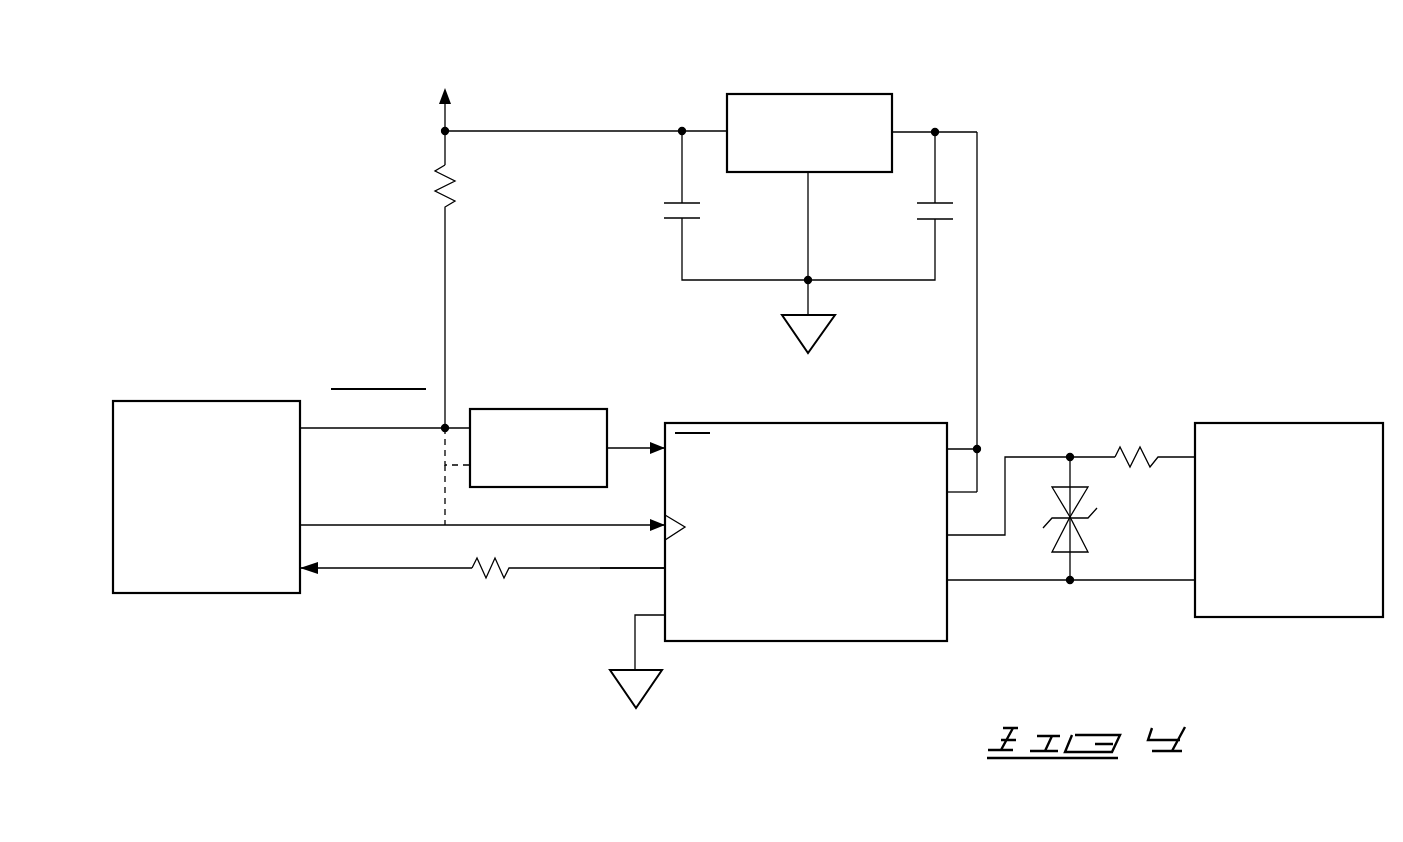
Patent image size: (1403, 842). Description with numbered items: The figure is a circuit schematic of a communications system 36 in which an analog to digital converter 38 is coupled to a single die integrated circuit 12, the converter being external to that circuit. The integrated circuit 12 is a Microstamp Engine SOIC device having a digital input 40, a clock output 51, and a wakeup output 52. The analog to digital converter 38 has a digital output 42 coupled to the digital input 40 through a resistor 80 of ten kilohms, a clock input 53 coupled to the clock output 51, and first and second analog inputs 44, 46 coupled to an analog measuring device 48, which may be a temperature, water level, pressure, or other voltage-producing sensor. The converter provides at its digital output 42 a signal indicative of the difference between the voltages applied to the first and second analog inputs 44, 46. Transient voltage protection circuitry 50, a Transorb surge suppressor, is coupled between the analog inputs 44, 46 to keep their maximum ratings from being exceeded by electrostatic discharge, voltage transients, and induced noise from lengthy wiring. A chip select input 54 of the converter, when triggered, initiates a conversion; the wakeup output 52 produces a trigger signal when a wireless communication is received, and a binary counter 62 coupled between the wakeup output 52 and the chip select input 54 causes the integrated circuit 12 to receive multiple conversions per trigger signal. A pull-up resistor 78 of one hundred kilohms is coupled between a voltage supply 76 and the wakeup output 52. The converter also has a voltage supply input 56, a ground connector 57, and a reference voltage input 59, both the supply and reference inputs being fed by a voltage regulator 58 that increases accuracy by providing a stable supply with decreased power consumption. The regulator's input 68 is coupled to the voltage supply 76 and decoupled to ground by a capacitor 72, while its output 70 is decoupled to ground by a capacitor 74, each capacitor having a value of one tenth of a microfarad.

The communications system 36 is at (1180, 89).
The integrated circuit 12 is at (192, 401).
The analog to digital converter 38 is at (840, 652).
The digital input 40 is at (302, 575).
The digital output 42 is at (664, 567).
The first analog input 44 is at (950, 538).
The second analog input 46 is at (951, 583).
The analog measuring device 48 is at (1277, 422).
The transient voltage protection circuitry 50 is at (1090, 535).
The clock output 51 is at (301, 525).
The wakeup output 52 is at (301, 427).
The clock input 53 is at (661, 524).
The chip select input 54 is at (629, 447).
The voltage supply input 56 is at (962, 447).
The ground connector 57 is at (664, 614).
The voltage regulator 58 is at (823, 93).
The reference voltage input 59 is at (951, 496).
The binary counter 62 is at (552, 409).
The input 68 is at (726, 132).
The output 70 is at (893, 131).
The capacitor 72 is at (680, 220).
The capacitor 74 is at (926, 220).
The voltage supply 76 is at (444, 116).
The pull-up resistor 78 is at (443, 192).
The resistor 80 is at (489, 596).